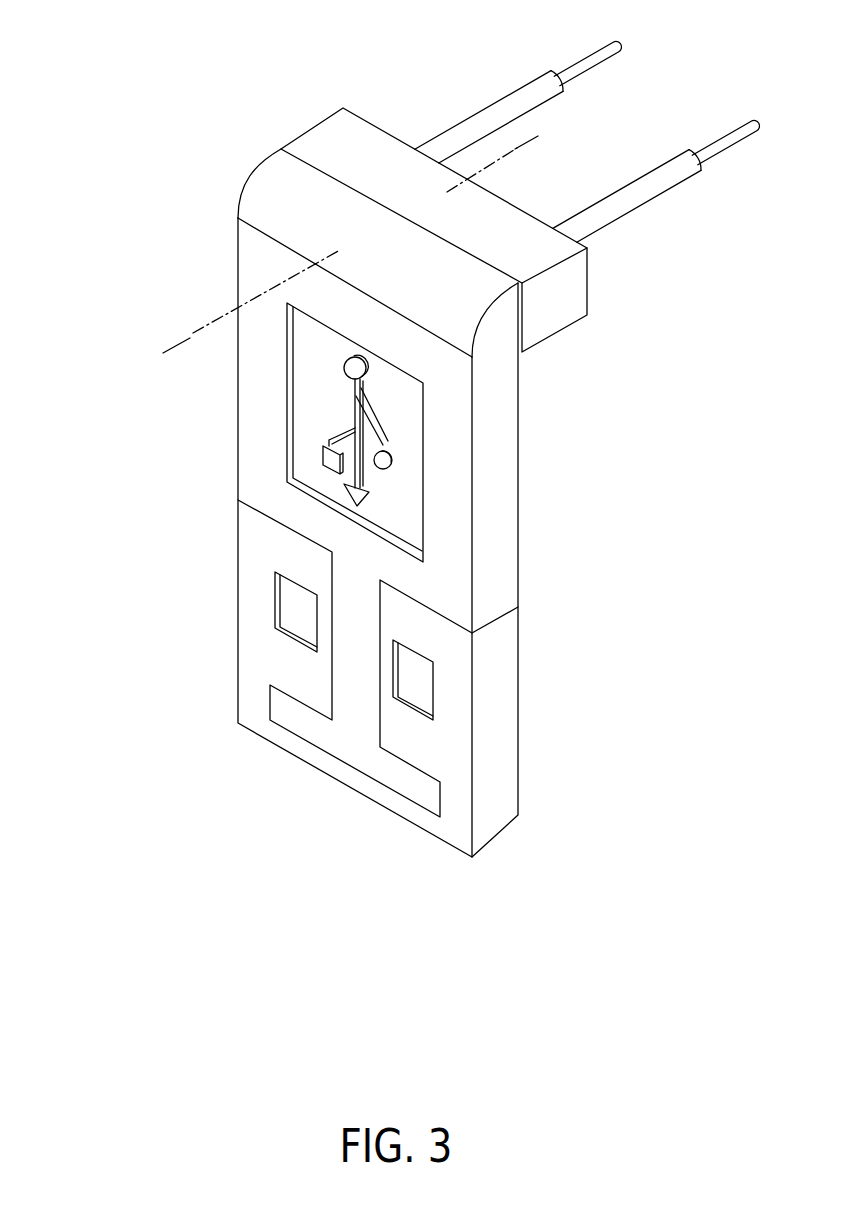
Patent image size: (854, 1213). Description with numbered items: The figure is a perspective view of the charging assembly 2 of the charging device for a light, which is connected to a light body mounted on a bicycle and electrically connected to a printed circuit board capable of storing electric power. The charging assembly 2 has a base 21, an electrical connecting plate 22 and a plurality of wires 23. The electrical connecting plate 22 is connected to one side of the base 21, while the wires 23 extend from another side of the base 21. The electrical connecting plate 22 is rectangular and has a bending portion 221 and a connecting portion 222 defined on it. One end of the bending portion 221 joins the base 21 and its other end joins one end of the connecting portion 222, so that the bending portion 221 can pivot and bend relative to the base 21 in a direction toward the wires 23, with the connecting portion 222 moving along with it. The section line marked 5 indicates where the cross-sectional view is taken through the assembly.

The charging assembly 2 is at (622, 714).
The base 21 is at (572, 287).
The electrical connecting plate 22 is at (90, 475).
The bending portion 221 is at (238, 432).
The connecting portion 222 is at (238, 610).
The wires 23 is at (497, 113).
The section line for FIG. 5 is at (527, 146).